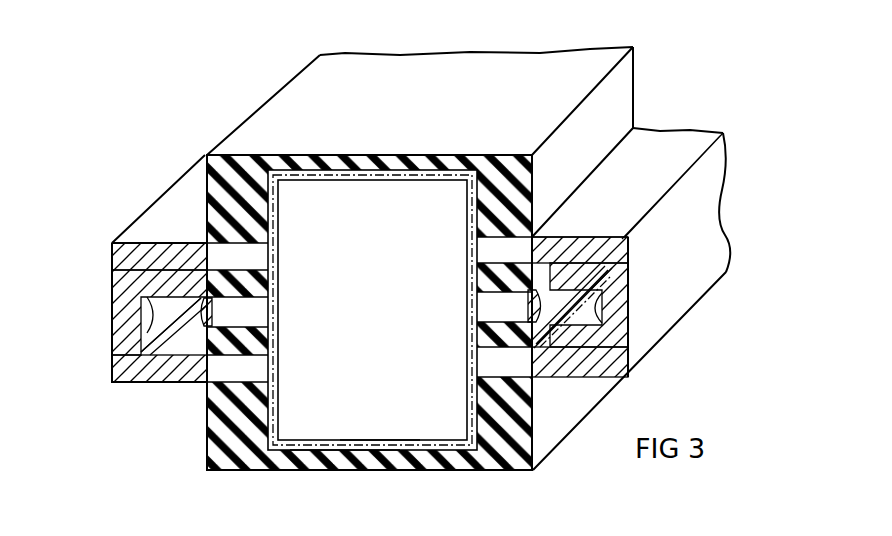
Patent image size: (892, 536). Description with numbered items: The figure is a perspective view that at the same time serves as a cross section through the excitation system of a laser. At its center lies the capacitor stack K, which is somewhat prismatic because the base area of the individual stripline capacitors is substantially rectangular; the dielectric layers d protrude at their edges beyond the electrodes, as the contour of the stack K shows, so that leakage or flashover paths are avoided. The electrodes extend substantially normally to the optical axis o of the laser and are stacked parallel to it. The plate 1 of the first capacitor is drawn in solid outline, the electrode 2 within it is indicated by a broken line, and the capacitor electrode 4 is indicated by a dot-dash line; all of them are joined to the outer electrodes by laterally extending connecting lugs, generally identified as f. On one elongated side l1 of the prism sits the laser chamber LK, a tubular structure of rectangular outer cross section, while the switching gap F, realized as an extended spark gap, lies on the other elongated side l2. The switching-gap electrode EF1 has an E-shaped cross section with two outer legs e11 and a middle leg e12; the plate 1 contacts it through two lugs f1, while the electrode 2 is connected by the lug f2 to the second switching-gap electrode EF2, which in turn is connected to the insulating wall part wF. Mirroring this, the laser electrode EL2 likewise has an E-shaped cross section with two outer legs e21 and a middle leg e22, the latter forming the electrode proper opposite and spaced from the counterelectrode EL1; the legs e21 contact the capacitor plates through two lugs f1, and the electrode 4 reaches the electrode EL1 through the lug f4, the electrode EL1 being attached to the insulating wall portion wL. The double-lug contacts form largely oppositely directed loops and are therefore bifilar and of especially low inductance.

The capacitor stack K is at (633, 77).
The elongated side of the prism l1 is at (620, 112).
The other elongated side of the prism l2 is at (203, 181).
The electrode 1 is at (290, 155).
The connecting lugs f is at (320, 216).
The electrode 2 is at (333, 445).
The capacitor electrode 4 is at (370, 441).
The dielectric layers d is at (525, 432).
The lugs f1 is at (270, 253).
The lug f2 is at (270, 312).
The connecting lug f4 is at (475, 307).
The switching gap F is at (96, 283).
The outer legs e11 is at (185, 251).
The middle leg e12 is at (140, 315).
The insulating wall portion wF is at (270, 284).
The electrode of the switching gap EF1 is at (123, 252).
The electrode of the switching gap EF2 is at (175, 337).
The laser chamber LK is at (647, 406).
The optical axis o is at (659, 199).
The outer electrode legs e21 is at (556, 248).
The middle leg e22 is at (602, 300).
The insulating wall portion wL is at (490, 278).
The electrode of the laser chamber EL1 is at (537, 290).
The electrode of the laser chamber EL2 is at (606, 238).